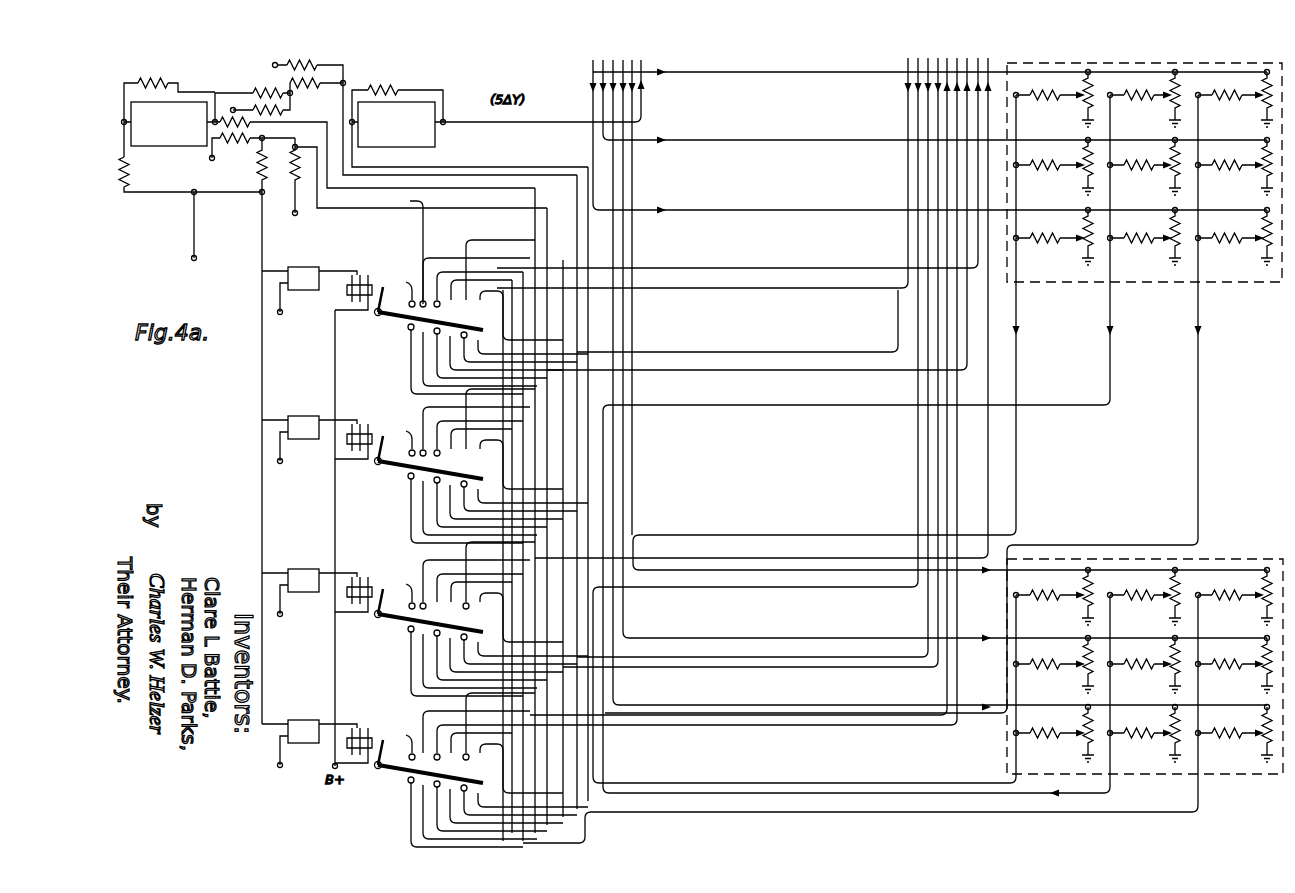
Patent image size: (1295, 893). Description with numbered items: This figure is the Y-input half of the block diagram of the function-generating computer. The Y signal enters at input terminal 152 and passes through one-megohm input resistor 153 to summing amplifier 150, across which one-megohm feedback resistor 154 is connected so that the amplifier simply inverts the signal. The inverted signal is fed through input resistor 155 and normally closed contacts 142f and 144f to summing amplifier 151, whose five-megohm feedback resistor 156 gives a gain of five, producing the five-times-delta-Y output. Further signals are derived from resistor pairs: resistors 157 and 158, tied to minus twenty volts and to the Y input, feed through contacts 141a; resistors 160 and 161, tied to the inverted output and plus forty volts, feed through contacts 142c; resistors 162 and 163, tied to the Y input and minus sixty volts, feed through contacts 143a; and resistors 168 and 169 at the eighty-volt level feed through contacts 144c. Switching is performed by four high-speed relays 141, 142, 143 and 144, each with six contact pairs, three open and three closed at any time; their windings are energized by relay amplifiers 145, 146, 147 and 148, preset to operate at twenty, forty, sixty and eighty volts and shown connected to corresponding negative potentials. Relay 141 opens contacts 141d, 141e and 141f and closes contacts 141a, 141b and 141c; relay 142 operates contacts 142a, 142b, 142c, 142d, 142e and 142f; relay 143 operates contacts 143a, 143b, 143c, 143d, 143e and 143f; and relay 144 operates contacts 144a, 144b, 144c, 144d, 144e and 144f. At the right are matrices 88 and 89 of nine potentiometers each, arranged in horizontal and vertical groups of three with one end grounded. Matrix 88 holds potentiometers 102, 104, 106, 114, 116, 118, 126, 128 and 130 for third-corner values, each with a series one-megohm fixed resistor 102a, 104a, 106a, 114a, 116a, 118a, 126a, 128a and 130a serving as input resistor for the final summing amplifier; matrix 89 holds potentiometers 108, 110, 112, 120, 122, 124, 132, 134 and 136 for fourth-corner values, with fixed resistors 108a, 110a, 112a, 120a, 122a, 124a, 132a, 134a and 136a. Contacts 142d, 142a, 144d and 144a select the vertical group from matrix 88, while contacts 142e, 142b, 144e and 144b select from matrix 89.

The matrix 88 is at (1240, 287).
The matrix 89 is at (1224, 558).
The potentiometer 102 is at (1076, 220).
The fixed resistor 102a is at (1060, 239).
The potentiometer 104 is at (1168, 220).
The fixed resistor 104a is at (1149, 239).
The potentiometer 106 is at (1258, 220).
The fixed resistor 106a is at (1240, 239).
The potentiometer 108 is at (1076, 716).
The fixed resistor 108a is at (1060, 735).
The potentiometer 110 is at (1168, 716).
The fixed resistor 110a is at (1149, 735).
The potentiometer 112 is at (1258, 716).
The fixed resistor 112a is at (1240, 735).
The potentiometer 114 is at (1076, 148).
The fixed resistor 114a is at (1060, 168).
The potentiometer 116 is at (1168, 148).
The fixed resistor 116a is at (1149, 168).
The potentiometer 118 is at (1258, 148).
The fixed resistor 118a is at (1240, 168).
The potentiometer 120 is at (1076, 647).
The fixed resistor 120a is at (1060, 666).
The potentiometer 122 is at (1168, 647).
The fixed resistor 122a is at (1149, 666).
The potentiometer 124 is at (1258, 647).
The fixed resistor 124a is at (1240, 666).
The potentiometer 126 is at (1076, 80).
The fixed resistor 126a is at (1060, 99).
The potentiometer 128 is at (1168, 80).
The fixed resistor 128a is at (1149, 99).
The potentiometer 130 is at (1258, 80).
The fixed resistor 130a is at (1240, 99).
The potentiometer 132 is at (1076, 579).
The fixed resistor 132a is at (1060, 598).
The potentiometer 134 is at (1168, 579).
The fixed resistor 134a is at (1149, 598).
The potentiometer 136 is at (1258, 579).
The fixed resistor 136a is at (1240, 598).
The relay 141 is at (357, 282).
The contacts 141a is at (410, 290).
The contacts 141b is at (436, 294).
The contacts 141c is at (440, 286).
The contacts 141d is at (411, 332).
The contacts 141e is at (432, 336).
The contacts 141f is at (460, 339).
The relay 142 is at (360, 431).
The contacts 142a is at (408, 450).
The contacts 142b is at (436, 450).
The contacts 142c is at (465, 451).
The contacts 142d is at (411, 479).
The contacts 142e is at (432, 483).
The contacts 142f is at (462, 486).
The relay 143 is at (360, 583).
The contacts 143a is at (410, 602).
The contacts 143b is at (422, 603).
The contacts 143c is at (466, 603).
The contacts 143d is at (411, 632).
The contacts 143e is at (436, 635).
The contacts 143f is at (462, 639).
The relay 144 is at (358, 730).
The contacts 144a is at (411, 754).
The contacts 144b is at (436, 754).
The contacts 144c is at (465, 754).
The contacts 144d is at (410, 782).
The contacts 144e is at (434, 787).
The contacts 144f is at (462, 792).
The relay amplifier 145 is at (300, 252).
The relay amplifier 146 is at (300, 401).
The relay amplifier 147 is at (300, 553).
The relay amplifier 148 is at (300, 704).
The summing amplifier 150 is at (150, 148).
The summing amplifier 151 is at (384, 148).
The input terminal 152 is at (196, 258).
The input resistor 153 is at (128, 174).
The feedback resistor 154 is at (154, 80).
The input resistor 155 is at (254, 126).
The feedback resistor 156 is at (386, 86).
The resistor 157 is at (214, 158).
The resistor 158 is at (240, 170).
The resistor 160 is at (255, 90).
The resistor 161 is at (286, 107).
The resistor 162 is at (264, 192).
The resistor 163 is at (306, 192).
The resistor 168 is at (322, 66).
The resistor 169 is at (338, 82).